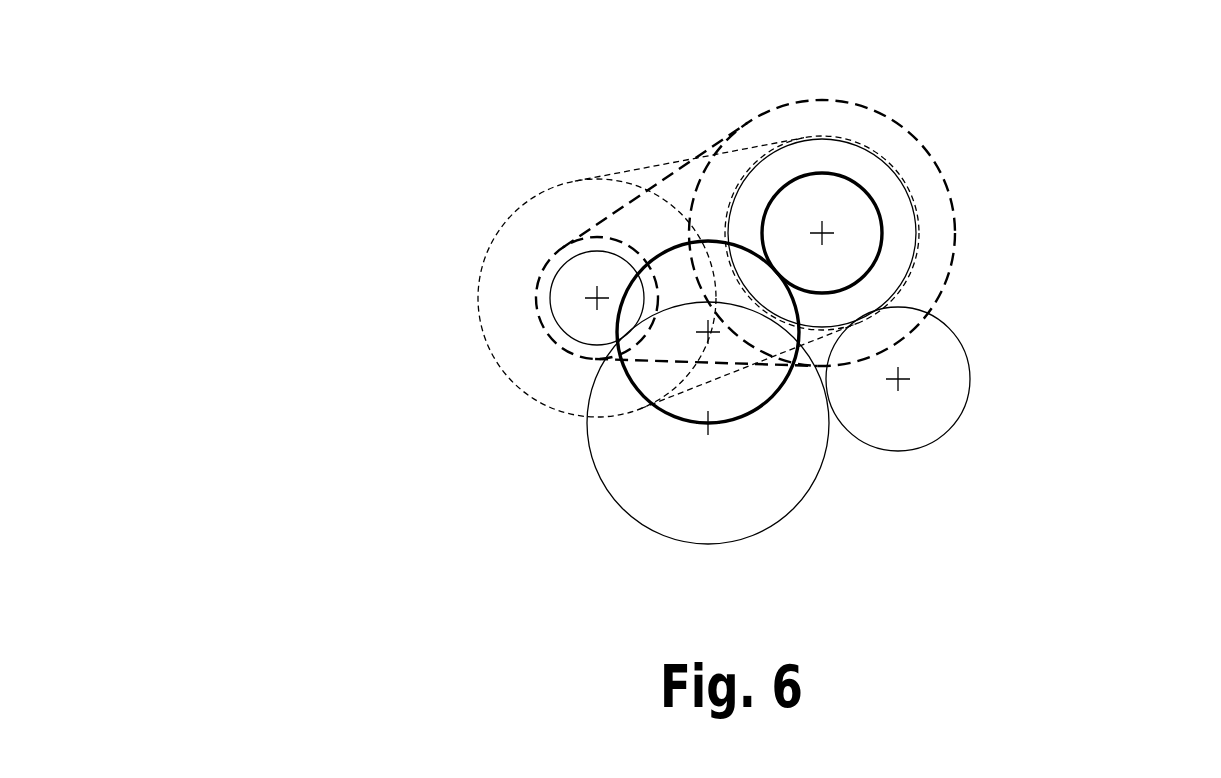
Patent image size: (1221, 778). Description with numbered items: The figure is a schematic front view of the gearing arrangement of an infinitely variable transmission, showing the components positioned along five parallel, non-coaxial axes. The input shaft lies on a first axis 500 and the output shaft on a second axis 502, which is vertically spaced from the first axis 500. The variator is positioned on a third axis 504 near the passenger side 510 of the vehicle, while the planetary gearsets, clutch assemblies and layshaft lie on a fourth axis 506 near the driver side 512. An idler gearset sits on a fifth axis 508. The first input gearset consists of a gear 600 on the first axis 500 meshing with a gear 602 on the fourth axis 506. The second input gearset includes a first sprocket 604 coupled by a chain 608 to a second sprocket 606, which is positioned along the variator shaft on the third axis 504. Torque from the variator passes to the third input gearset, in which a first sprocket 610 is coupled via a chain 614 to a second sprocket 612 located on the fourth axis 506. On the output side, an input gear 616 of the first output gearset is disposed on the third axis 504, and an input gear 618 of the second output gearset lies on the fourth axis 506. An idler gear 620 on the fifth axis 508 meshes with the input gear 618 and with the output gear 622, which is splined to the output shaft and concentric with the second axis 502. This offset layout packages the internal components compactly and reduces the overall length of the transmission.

The first axis 500 is at (705, 326).
The second axis 502 is at (717, 432).
The third axis 504 is at (589, 303).
The fourth axis 506 is at (831, 230).
The fifth axis 508 is at (903, 383).
The passenger side 510 is at (337, 112).
The driver side 512 is at (1073, 110).
The gear 600 is at (677, 421).
The gear 602 is at (826, 171).
The first sprocket 604 is at (899, 112).
The second sprocket 606 is at (536, 282).
The chain 608 is at (606, 212).
The first sprocket 610 is at (506, 212).
The second sprocket 612 is at (888, 157).
The chain 614 is at (656, 157).
The input gear 616 is at (547, 304).
The input gear 618 is at (922, 248).
The idler gear 620 is at (969, 349).
The output gear 622 is at (632, 523).